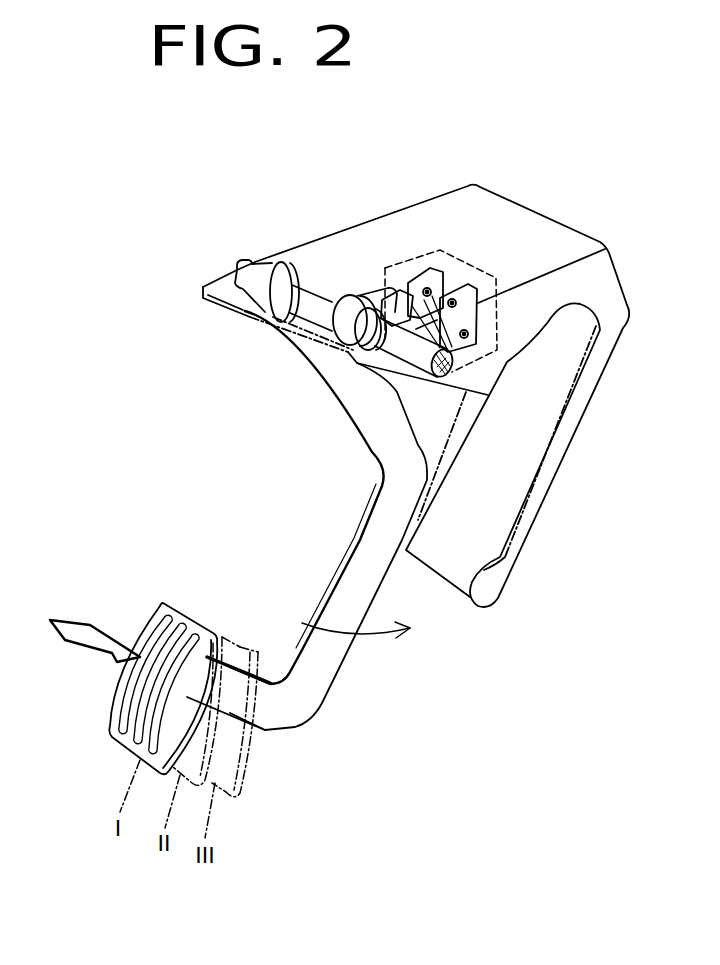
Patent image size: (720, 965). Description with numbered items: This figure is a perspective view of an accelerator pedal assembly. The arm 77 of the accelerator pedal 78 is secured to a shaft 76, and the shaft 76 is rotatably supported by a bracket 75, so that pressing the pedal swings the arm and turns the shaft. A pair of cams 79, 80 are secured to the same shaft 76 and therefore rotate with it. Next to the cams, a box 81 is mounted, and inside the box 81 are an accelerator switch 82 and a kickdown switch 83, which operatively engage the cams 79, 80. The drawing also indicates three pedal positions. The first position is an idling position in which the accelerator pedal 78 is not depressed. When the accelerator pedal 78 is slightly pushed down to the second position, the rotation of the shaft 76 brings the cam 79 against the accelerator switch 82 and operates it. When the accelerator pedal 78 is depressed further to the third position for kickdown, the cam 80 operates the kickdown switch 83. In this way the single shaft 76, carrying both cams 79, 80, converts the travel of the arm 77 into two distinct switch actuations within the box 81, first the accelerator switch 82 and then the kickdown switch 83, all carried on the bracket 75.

The bracket 75 is at (606, 251).
The shaft 76 is at (253, 277).
The arm 77 is at (337, 580).
The accelerator pedal 78 is at (170, 612).
The cam 79 is at (360, 296).
The cam 80 is at (392, 360).
The box 81 is at (497, 327).
The accelerator switch 82 is at (429, 275).
The kickdown switch 83 is at (460, 285).